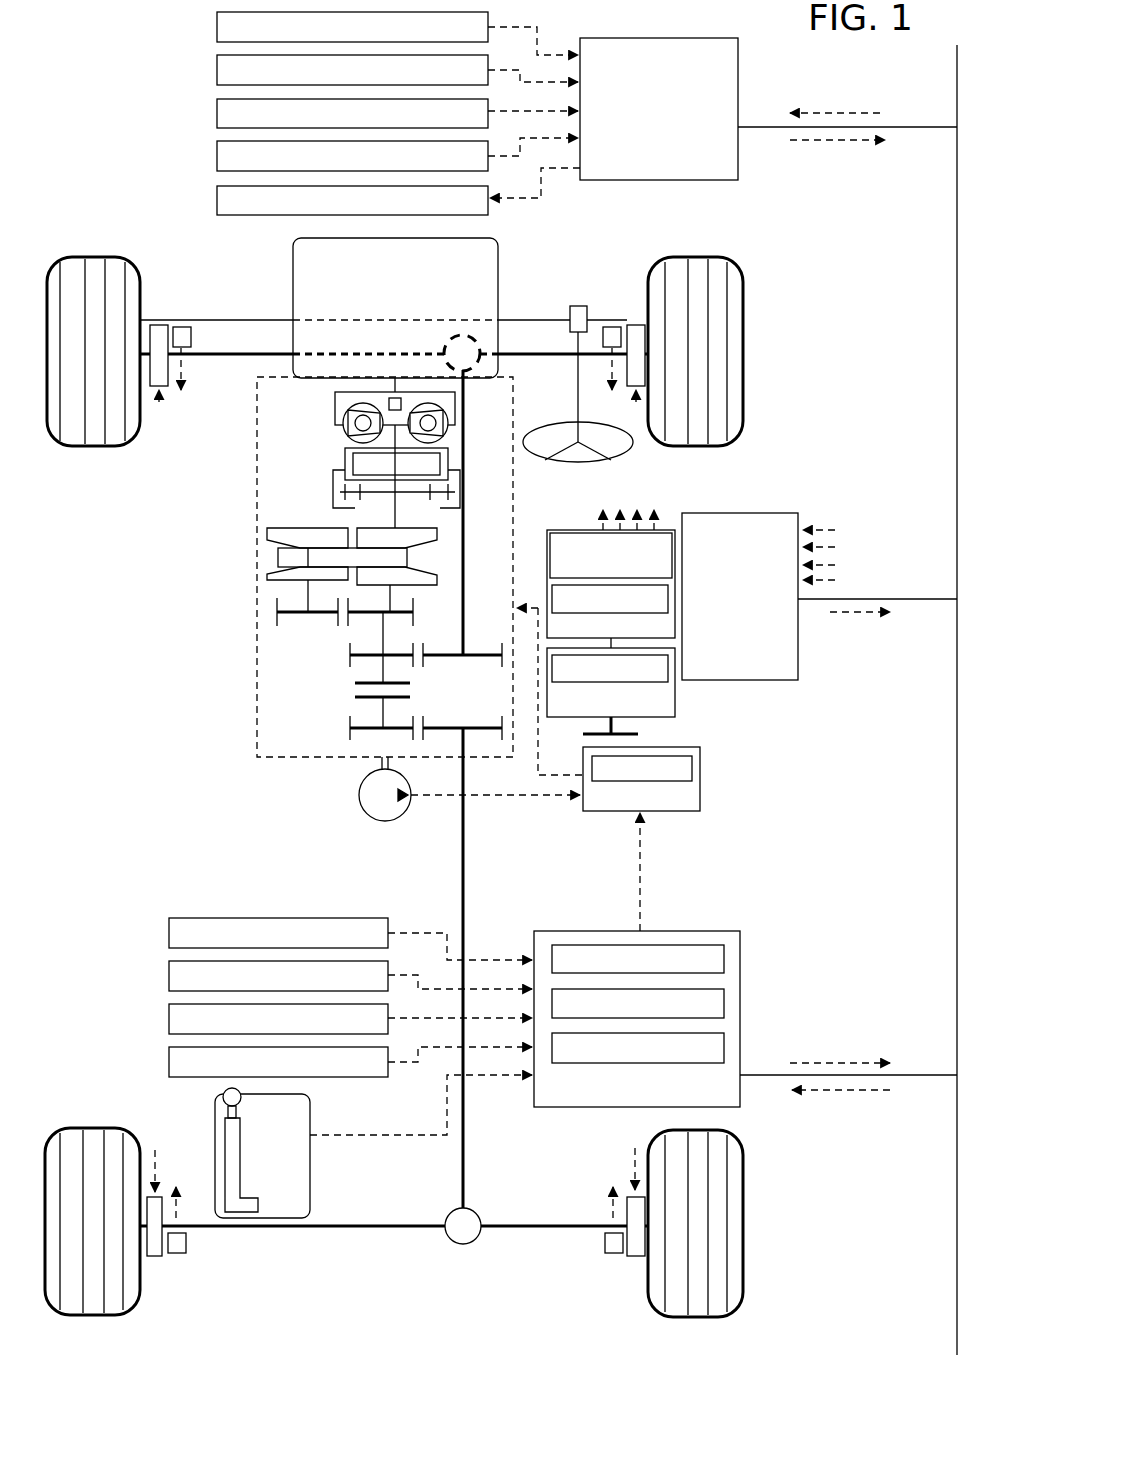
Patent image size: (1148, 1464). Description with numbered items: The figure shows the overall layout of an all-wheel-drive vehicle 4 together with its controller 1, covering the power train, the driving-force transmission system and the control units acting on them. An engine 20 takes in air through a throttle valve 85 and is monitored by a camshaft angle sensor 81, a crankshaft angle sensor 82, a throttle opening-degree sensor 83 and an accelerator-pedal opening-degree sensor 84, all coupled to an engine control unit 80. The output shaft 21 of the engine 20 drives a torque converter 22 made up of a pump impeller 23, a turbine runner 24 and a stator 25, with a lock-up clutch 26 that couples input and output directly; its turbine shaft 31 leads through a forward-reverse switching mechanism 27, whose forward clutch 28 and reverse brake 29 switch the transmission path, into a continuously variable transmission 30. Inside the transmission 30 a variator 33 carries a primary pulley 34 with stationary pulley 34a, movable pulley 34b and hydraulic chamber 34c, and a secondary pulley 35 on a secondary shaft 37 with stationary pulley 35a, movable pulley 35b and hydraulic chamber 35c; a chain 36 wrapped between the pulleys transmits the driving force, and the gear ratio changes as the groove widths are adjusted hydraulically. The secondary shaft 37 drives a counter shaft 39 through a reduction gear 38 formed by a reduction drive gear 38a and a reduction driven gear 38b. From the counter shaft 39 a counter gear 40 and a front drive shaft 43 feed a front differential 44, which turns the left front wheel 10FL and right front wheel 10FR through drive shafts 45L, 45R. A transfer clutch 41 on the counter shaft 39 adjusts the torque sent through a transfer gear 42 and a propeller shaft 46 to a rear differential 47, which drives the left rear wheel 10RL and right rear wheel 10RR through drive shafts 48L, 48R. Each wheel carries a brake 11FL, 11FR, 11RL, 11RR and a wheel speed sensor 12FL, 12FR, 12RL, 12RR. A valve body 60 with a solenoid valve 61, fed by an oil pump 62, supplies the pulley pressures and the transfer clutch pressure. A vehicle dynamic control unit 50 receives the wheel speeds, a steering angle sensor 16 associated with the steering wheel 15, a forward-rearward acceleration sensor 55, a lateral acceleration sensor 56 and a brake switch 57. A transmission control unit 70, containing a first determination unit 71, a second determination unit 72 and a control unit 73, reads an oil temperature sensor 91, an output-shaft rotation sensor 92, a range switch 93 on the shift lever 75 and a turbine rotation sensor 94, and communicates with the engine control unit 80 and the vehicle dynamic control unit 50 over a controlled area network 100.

The all-wheel-drive-vehicle controller 1 is at (812, 810).
The all-wheel-drive vehicle 4 is at (140, 190).
The left front wheel 10FL is at (94, 257).
The right front wheel 10FR is at (743, 290).
The left rear wheel 10RL is at (92, 1315).
The right rear wheel 10RR is at (700, 1317).
The brake 11FL is at (159, 325).
The brake 11FR is at (636, 325).
The brake 11RL is at (155, 1256).
The brake 11RR is at (638, 1256).
The wheel speed sensor 12FL is at (181, 327).
The wheel speed sensor 12FR is at (612, 327).
The wheel speed sensor 12RL is at (180, 1253).
The wheel speed sensor 12RR is at (612, 1253).
The steering wheel 15 is at (566, 425).
The steering angle sensor 16 is at (575, 305).
The engine 20 is at (293, 280).
The output shaft 21 is at (393, 385).
The torque converter 22 is at (304, 418).
The pump impeller 23 is at (345, 440).
The turbine runner 24 is at (345, 398).
The stator 25 is at (355, 424).
The lock-up clutch 26 is at (455, 410).
The forward-reverse switching mechanism 27 is at (339, 480).
The forward clutch 28 is at (342, 465).
The reverse brake 29 is at (345, 503).
The continuously variable transmission 30 is at (257, 695).
The turbine shaft 31 is at (445, 440).
The transmission mechanism 33 is at (447, 597).
The primary pulley 34 is at (459, 548).
The stationary pulley 34a is at (437, 535).
The movable pulley 34b is at (437, 572).
The hydraulic chamber 34c is at (437, 588).
The secondary pulley 35 is at (230, 550).
The stationary pulley 35a is at (300, 572).
The movable pulley 35b is at (305, 555).
The hydraulic chamber 35c is at (300, 540).
The chain 36 is at (280, 558).
The secondary shaft 37 is at (302, 598).
The reduction gear 38 is at (327, 619).
The reduction drive gear 38a is at (318, 612).
The reduction driven gear 38b is at (400, 616).
The counter shaft 39 is at (380, 635).
The counter gear 40 is at (345, 660).
The transfer clutch 41 is at (350, 690).
The transfer gear 42 is at (345, 732).
The front drive shaft 43 is at (465, 390).
The front differential 44 is at (458, 335).
The left-front-wheel drive shaft 45L is at (254, 352).
The right-front-wheel drive shaft 45R is at (528, 352).
The propeller shaft 46 is at (465, 1130).
The rear differential 47 is at (447, 1210).
The left-rear-wheel drive shaft 48L is at (347, 1226).
The right-rear-wheel drive shaft 48R is at (537, 1226).
The vehicle dynamic control unit 50 is at (755, 513).
The forward-rearward acceleration sensor 55 is at (672, 558).
The lateral acceleration sensor 56 is at (668, 597).
The brake switch 57 is at (668, 668).
The valve body 60 is at (700, 790).
The solenoid valve 61 is at (692, 768).
The oil pump 62 is at (359, 793).
The transmission control unit 70 is at (534, 945).
The first determination unit 71 is at (724, 956).
The second determination unit 72 is at (724, 1002).
The control unit 73 is at (724, 1045).
The shift lever 75 is at (222, 1100).
The engine control unit 80 is at (738, 62).
The camshaft angle sensor 81 is at (217, 27).
The crankshaft angle sensor 82 is at (217, 70).
The throttle opening-degree sensor 83 is at (217, 113).
The accelerator-pedal opening-degree sensor 84 is at (217, 156).
The throttle valve 85 is at (217, 200).
The oil temperature sensor 91 is at (169, 933).
The output-shaft rotation sensor 92 is at (169, 976).
The range switch 93 is at (169, 1019).
The turbine rotation sensor 94 is at (169, 1062).
The controlled area network 100 is at (957, 1335).